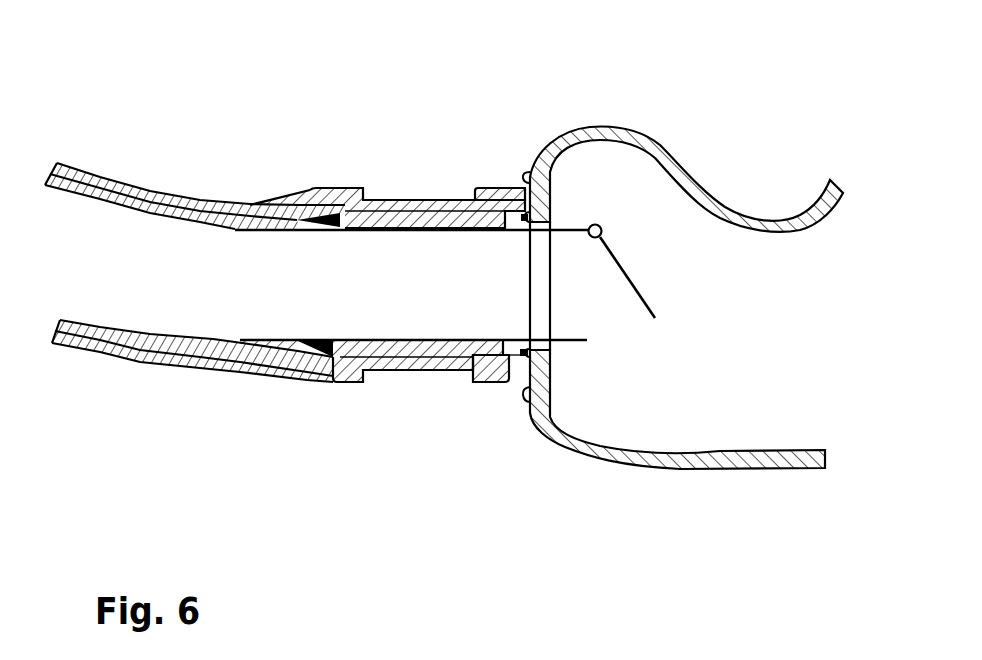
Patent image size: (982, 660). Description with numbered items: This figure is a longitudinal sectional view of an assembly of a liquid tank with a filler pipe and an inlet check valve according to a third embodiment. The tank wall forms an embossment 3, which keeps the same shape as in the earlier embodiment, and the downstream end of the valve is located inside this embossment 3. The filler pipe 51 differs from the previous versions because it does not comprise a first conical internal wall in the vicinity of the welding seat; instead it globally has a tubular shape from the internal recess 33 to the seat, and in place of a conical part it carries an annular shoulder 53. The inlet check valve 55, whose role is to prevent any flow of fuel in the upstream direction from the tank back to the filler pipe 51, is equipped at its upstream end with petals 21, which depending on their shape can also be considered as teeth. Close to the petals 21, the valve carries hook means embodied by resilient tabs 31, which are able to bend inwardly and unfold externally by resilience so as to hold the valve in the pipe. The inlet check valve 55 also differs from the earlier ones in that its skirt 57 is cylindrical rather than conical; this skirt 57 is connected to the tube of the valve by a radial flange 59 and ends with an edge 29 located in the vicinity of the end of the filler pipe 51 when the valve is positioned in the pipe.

The embossment 3 is at (714, 132).
The petals 21 is at (270, 343).
The edge 29 is at (548, 372).
The resilient tabs 31 is at (319, 383).
The internal recess 33 is at (290, 230).
The filler pipe 51 is at (372, 182).
The annular shoulder 53 is at (487, 186).
The inlet check valve 55 is at (575, 218).
The skirt 57 is at (504, 360).
The radial flange 59 is at (462, 372).